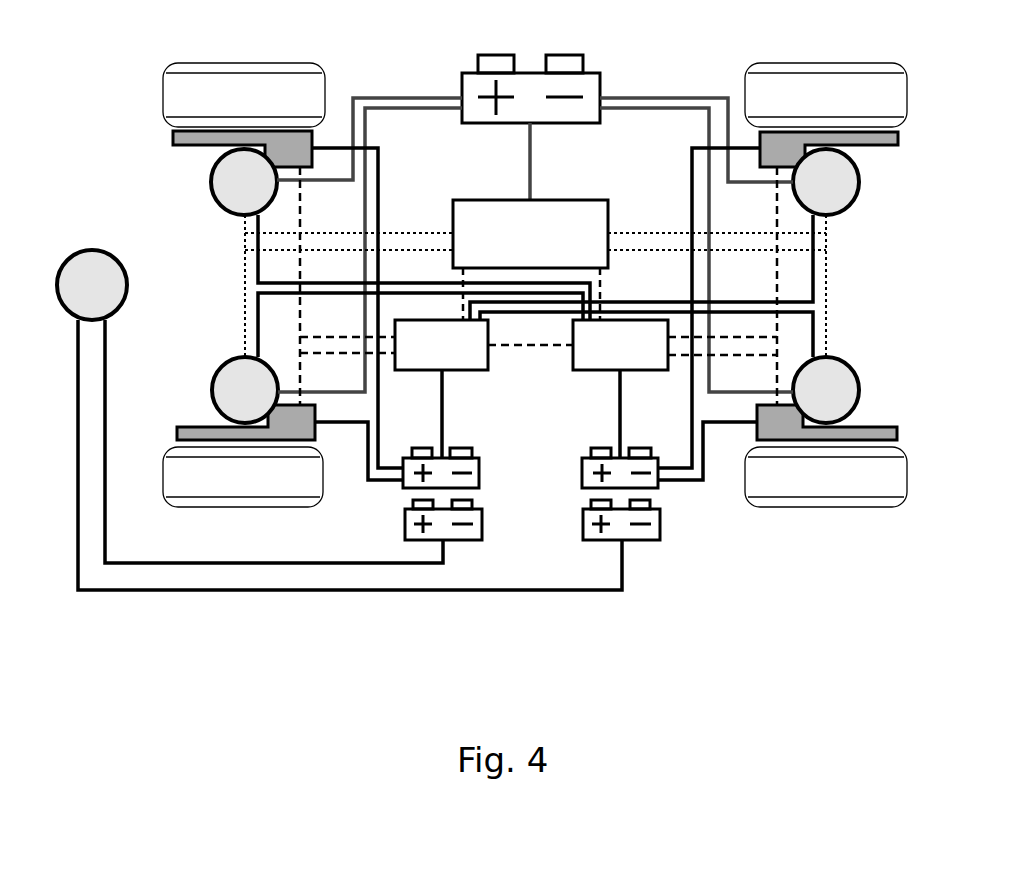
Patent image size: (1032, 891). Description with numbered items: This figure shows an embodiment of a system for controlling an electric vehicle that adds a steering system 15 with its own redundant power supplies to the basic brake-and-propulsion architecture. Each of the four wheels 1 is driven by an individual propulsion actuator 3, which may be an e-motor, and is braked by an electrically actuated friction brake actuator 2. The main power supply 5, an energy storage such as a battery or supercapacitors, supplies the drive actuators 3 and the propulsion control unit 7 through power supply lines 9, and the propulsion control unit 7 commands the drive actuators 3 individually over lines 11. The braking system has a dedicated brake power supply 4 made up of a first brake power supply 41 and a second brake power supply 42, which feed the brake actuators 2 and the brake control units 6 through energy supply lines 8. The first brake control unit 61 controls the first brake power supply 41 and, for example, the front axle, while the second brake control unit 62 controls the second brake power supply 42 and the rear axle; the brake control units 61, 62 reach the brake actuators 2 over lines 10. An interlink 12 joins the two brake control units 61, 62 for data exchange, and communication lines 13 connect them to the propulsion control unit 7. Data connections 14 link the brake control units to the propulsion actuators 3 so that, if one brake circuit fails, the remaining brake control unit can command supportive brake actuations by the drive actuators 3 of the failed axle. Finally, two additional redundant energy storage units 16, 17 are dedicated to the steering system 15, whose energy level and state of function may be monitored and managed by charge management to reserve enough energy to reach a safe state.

The wheel 1 is at (272, 88).
The brake actuator 2 is at (208, 145).
The propulsion actuator 3 is at (232, 193).
The brake power supply 4 is at (530, 450).
The first brake power supply 41 is at (460, 446).
The second brake power supply 42 is at (600, 447).
The main power supply 5 is at (590, 85).
The brake control unit 6 is at (531, 389).
The first brake control unit 61 is at (463, 357).
The second brake control unit 62 is at (593, 358).
The propulsion control unit 7 is at (573, 217).
The energy supply line for brake system 8 is at (368, 438).
The energy supply line for propulsion system 9 is at (385, 108).
The communication/control line for brake system 10 is at (345, 353).
The communication/control line for propulsion system 11 is at (245, 233).
The interlink 12 is at (532, 345).
The communication/control line between brake and propulsion control units 13 is at (462, 308).
The communication/control line between brake and propulsion actuator units 14 is at (257, 272).
The steering system 15 is at (57, 287).
The energy storage unit dedicated for steering system 16 is at (482, 520).
The energy storage unit dedicated for steering system 17 is at (582, 520).